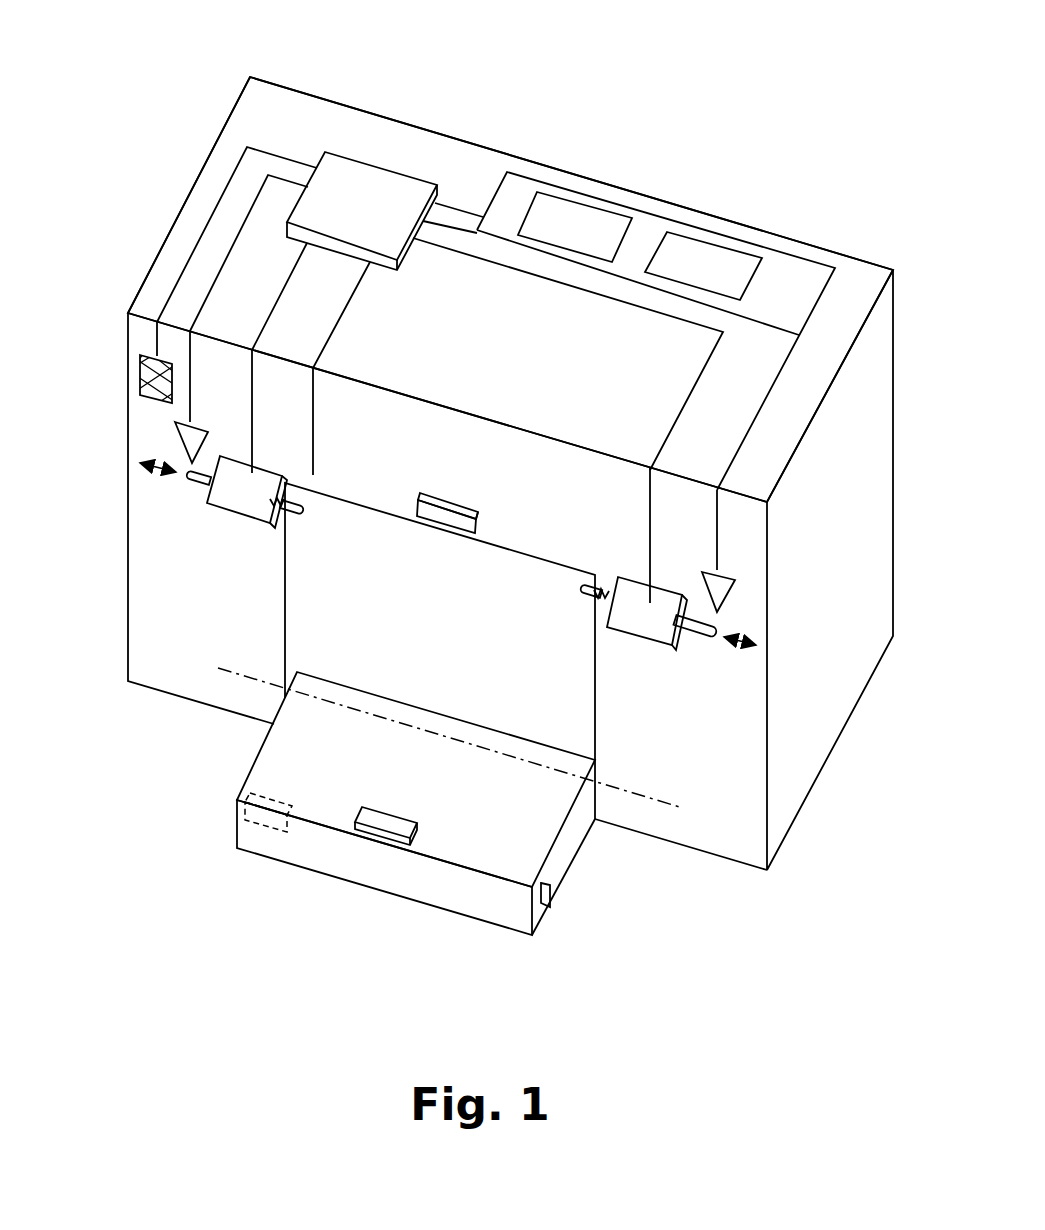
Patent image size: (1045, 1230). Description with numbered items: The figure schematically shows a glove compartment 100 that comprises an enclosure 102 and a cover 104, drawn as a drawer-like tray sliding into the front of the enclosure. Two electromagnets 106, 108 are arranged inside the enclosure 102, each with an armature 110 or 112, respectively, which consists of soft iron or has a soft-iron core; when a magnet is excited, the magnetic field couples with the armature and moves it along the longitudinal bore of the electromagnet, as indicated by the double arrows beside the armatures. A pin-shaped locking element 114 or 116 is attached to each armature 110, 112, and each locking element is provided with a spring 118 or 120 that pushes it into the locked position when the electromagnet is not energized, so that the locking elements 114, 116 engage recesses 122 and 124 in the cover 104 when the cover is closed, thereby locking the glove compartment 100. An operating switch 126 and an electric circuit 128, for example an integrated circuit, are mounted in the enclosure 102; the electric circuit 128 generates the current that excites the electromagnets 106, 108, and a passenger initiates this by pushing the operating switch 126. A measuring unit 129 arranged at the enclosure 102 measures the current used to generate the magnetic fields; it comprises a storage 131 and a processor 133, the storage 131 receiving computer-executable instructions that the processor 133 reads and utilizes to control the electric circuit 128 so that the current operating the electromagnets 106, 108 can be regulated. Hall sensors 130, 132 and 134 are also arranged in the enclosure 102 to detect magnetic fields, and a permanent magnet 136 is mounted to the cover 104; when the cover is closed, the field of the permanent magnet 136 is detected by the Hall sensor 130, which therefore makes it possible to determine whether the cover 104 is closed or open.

The glove compartment 100 is at (520, 110).
The enclosure 102 is at (853, 292).
The cover 104 is at (406, 880).
The electromagnet 106 is at (271, 480).
The electromagnet 108 is at (632, 586).
The armature 110 is at (187, 480).
The armature 112 is at (698, 629).
The locking element 114 is at (304, 511).
The locking element 116 is at (582, 588).
The spring 118 is at (280, 514).
The spring 120 is at (600, 600).
The recess 122 is at (234, 814).
The recess 124 is at (555, 899).
The operating switch 126 is at (140, 372).
The electric circuit 128 is at (370, 173).
The measuring unit 129 is at (656, 213).
The Hall sensor 130 is at (455, 508).
The storage 131 is at (585, 202).
The Hall sensor 132 is at (727, 592).
The processor 133 is at (732, 250).
The Hall sensor 134 is at (176, 428).
The permanent magnet 136 is at (388, 822).